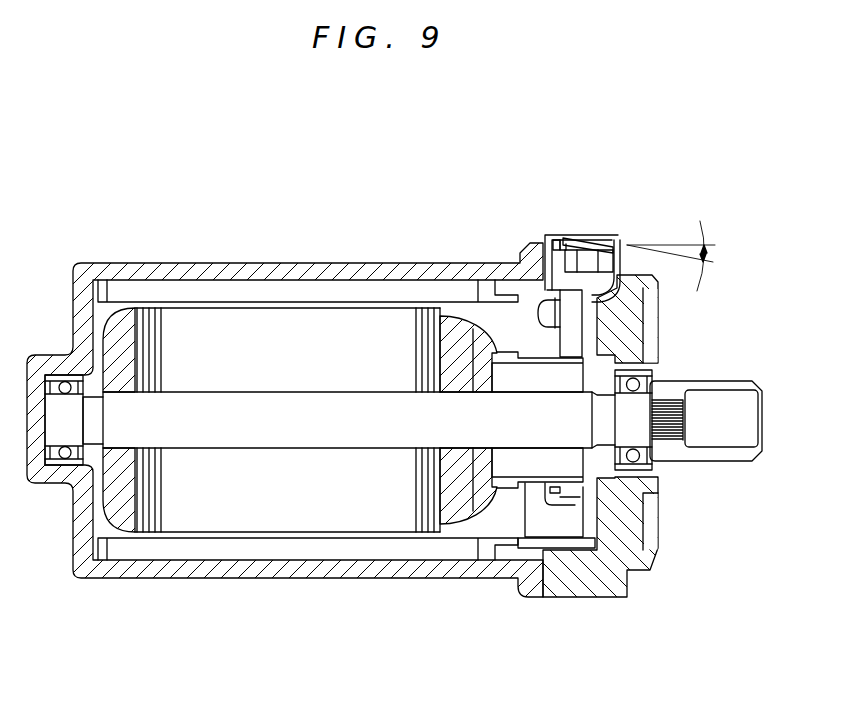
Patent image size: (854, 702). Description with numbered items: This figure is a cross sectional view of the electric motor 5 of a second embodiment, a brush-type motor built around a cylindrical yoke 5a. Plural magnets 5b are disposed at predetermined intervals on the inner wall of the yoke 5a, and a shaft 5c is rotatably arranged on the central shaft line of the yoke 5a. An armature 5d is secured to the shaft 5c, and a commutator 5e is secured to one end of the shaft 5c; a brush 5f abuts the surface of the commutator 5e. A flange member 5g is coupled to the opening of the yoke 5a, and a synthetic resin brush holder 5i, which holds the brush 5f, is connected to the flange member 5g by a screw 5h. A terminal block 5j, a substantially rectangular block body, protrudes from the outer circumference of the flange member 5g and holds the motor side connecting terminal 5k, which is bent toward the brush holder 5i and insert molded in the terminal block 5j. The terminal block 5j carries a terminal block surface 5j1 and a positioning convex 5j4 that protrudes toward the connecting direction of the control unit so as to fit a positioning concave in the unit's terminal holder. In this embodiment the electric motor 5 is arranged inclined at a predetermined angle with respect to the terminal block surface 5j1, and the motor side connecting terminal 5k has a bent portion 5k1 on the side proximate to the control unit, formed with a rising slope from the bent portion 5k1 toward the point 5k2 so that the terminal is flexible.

The electric motor 5 is at (130, 263).
The yoke 5a is at (303, 275).
The magnets 5b is at (210, 290).
The shaft 5c is at (198, 430).
The armature 5d is at (356, 505).
The commutator 5e is at (540, 478).
The brush 5f is at (573, 520).
The flange member 5g is at (583, 580).
The screw 5h is at (538, 314).
The brush holder 5i is at (570, 337).
The terminal block 5j is at (553, 237).
The terminal block surface 5j1 is at (590, 248).
The positioning convex 5j4 is at (627, 245).
The motor side connecting terminal 5k is at (603, 240).
The bent portion 5k1 is at (613, 240).
The point 5k2 is at (572, 248).